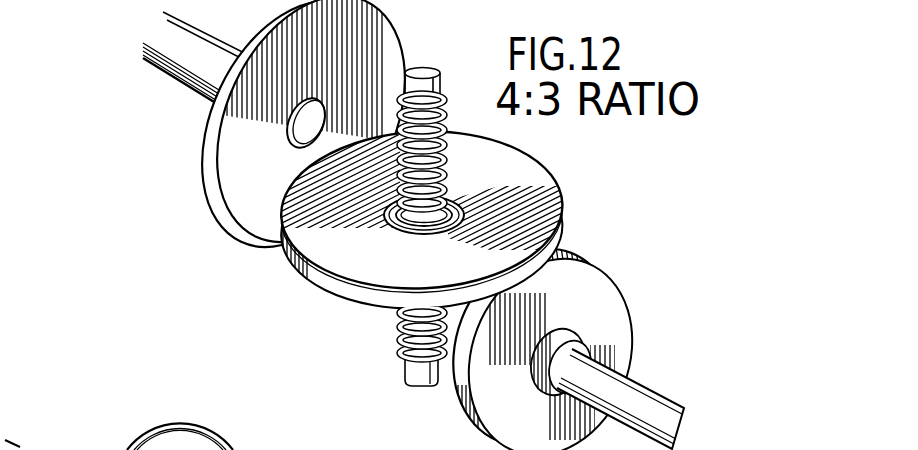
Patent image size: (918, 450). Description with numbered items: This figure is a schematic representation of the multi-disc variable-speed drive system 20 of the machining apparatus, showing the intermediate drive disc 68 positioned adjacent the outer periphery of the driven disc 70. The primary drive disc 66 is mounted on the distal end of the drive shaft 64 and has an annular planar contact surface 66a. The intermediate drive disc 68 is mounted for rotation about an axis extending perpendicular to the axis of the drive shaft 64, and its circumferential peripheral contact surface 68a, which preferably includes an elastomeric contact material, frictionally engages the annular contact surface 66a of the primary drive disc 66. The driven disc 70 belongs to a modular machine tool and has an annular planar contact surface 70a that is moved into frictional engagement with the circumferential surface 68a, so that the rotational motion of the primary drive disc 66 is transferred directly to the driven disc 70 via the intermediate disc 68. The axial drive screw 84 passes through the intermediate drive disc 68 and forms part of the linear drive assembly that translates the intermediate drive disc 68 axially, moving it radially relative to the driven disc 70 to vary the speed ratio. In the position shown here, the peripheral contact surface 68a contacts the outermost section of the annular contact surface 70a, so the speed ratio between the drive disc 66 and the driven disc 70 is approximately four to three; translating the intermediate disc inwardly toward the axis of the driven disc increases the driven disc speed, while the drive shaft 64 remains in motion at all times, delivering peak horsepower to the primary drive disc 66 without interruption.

The multi-disc variable-speed drive system 20 is at (283, 303).
The drive shaft 64 is at (173, 80).
The primary drive disc 66 is at (205, 150).
The annular planar contact surface 66a is at (233, 207).
The intermediate drive disc 68 is at (532, 190).
The circumferential peripheral contact surface 68a is at (373, 292).
The driven disc 70 is at (610, 305).
The annular planar contact surface 70a is at (455, 410).
The axial drive screw 84 is at (400, 357).